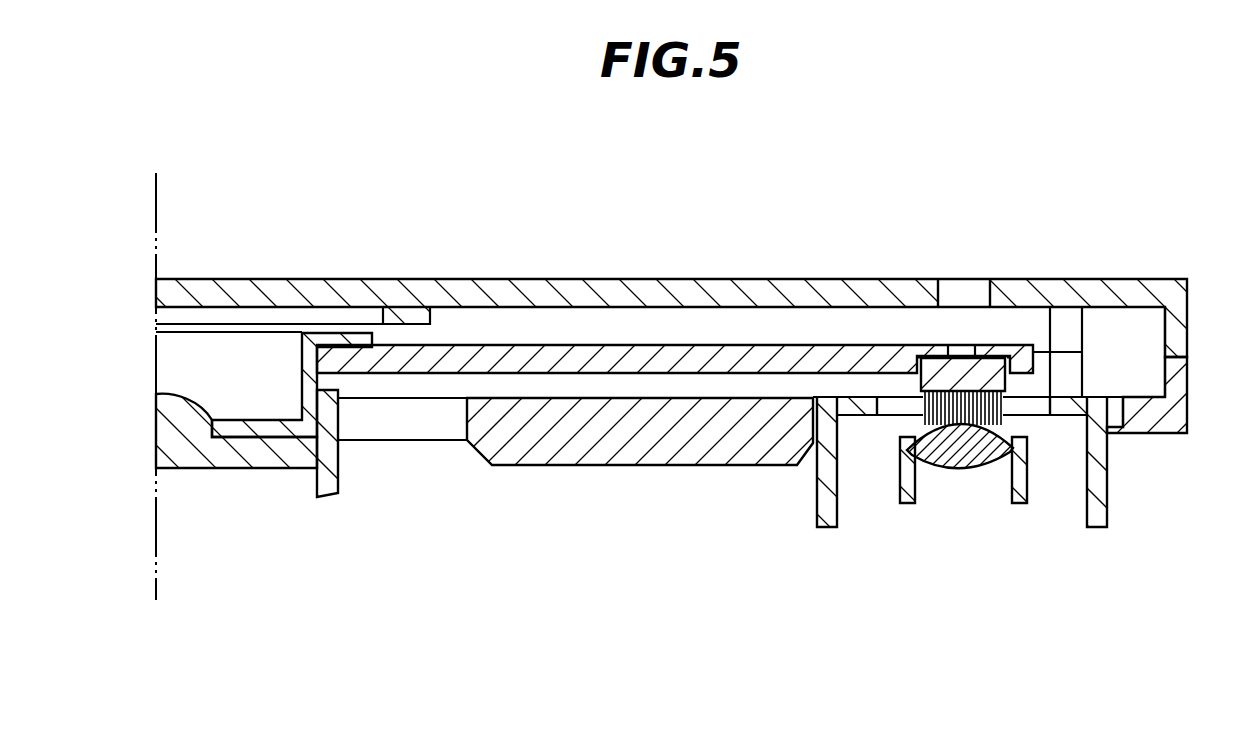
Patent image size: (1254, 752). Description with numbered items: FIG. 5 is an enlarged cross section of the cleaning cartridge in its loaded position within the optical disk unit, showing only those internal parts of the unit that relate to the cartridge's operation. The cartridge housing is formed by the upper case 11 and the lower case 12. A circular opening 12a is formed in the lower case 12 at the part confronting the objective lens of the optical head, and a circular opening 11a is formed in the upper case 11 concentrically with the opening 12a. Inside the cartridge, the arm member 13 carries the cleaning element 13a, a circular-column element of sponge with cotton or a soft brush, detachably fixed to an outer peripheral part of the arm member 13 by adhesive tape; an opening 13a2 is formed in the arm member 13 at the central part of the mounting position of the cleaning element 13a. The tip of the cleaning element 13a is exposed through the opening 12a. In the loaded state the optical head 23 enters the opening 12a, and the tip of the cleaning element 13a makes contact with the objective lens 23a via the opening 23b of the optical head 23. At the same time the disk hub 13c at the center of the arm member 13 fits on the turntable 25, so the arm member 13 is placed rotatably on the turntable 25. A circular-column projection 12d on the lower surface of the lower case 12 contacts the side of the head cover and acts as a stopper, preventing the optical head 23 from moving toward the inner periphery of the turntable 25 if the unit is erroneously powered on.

The upper case 11 is at (1186, 296).
The circular opening 11a is at (943, 300).
The lower case 12 is at (1182, 397).
The circular opening 12a is at (1120, 433).
The projection 12d is at (573, 455).
The arm member 13 is at (688, 343).
The cleaning element 13a is at (935, 352).
The opening 13a2 is at (970, 352).
The disk hub 13c is at (242, 420).
The optical head 23 is at (1107, 493).
The objective lens 23a is at (953, 470).
The opening 23b is at (1037, 418).
The turntable 25 is at (332, 456).